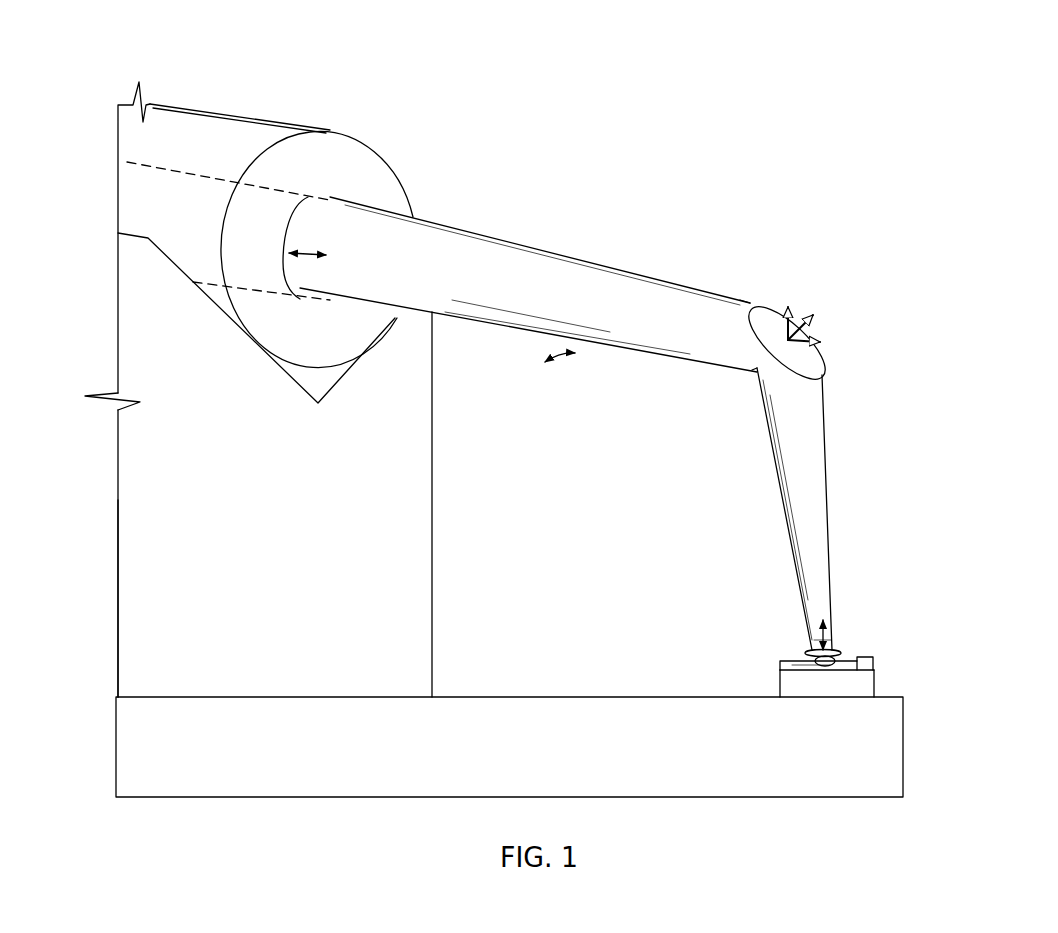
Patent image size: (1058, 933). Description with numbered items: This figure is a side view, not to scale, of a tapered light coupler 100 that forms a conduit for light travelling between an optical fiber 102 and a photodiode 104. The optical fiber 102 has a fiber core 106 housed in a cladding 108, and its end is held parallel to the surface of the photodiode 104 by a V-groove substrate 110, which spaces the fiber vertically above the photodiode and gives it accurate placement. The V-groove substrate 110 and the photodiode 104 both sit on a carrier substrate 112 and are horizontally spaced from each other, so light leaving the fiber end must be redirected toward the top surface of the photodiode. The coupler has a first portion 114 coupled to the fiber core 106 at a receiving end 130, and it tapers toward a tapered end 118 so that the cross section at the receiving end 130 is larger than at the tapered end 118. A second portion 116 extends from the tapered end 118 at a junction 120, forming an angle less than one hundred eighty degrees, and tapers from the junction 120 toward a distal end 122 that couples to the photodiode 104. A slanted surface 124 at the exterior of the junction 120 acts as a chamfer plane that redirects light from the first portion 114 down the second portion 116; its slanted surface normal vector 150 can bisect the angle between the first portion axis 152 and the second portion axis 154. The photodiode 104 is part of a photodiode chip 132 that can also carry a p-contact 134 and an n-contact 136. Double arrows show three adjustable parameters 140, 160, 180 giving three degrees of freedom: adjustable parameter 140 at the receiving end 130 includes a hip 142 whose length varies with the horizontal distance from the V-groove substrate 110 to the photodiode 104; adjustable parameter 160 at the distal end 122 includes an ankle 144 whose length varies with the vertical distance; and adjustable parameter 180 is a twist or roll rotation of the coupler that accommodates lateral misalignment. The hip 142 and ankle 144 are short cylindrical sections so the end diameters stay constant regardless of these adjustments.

The tapered light coupler 100 is at (658, 215).
The optical fiber 102 is at (92, 112).
The photodiode 104 is at (858, 670).
The fiber core 106 is at (128, 200).
The cladding 108 is at (220, 135).
The V-groove substrate 110 is at (155, 520).
The carrier substrate 112 is at (893, 735).
The first portion 114 is at (520, 265).
The second portion 116 is at (797, 478).
The tapered end 118 is at (745, 299).
The junction 120 is at (745, 385).
The distal end 122 is at (834, 651).
The slanted surface 124 is at (767, 313).
The receiving end 130 is at (288, 292).
The photodiode chip 132 is at (875, 688).
The p-contact 134 is at (858, 656).
The n-contact 136 is at (780, 661).
The adjustable parameter 140 is at (305, 250).
The hip 142 is at (322, 200).
The ankle 144 is at (832, 650).
The slanted surface normal vector 150 is at (817, 313).
The first portion axis 152 is at (824, 341).
The second portion axis 154 is at (790, 304).
The adjustable parameter 160 is at (826, 620).
The adjustable parameter 180 is at (562, 366).